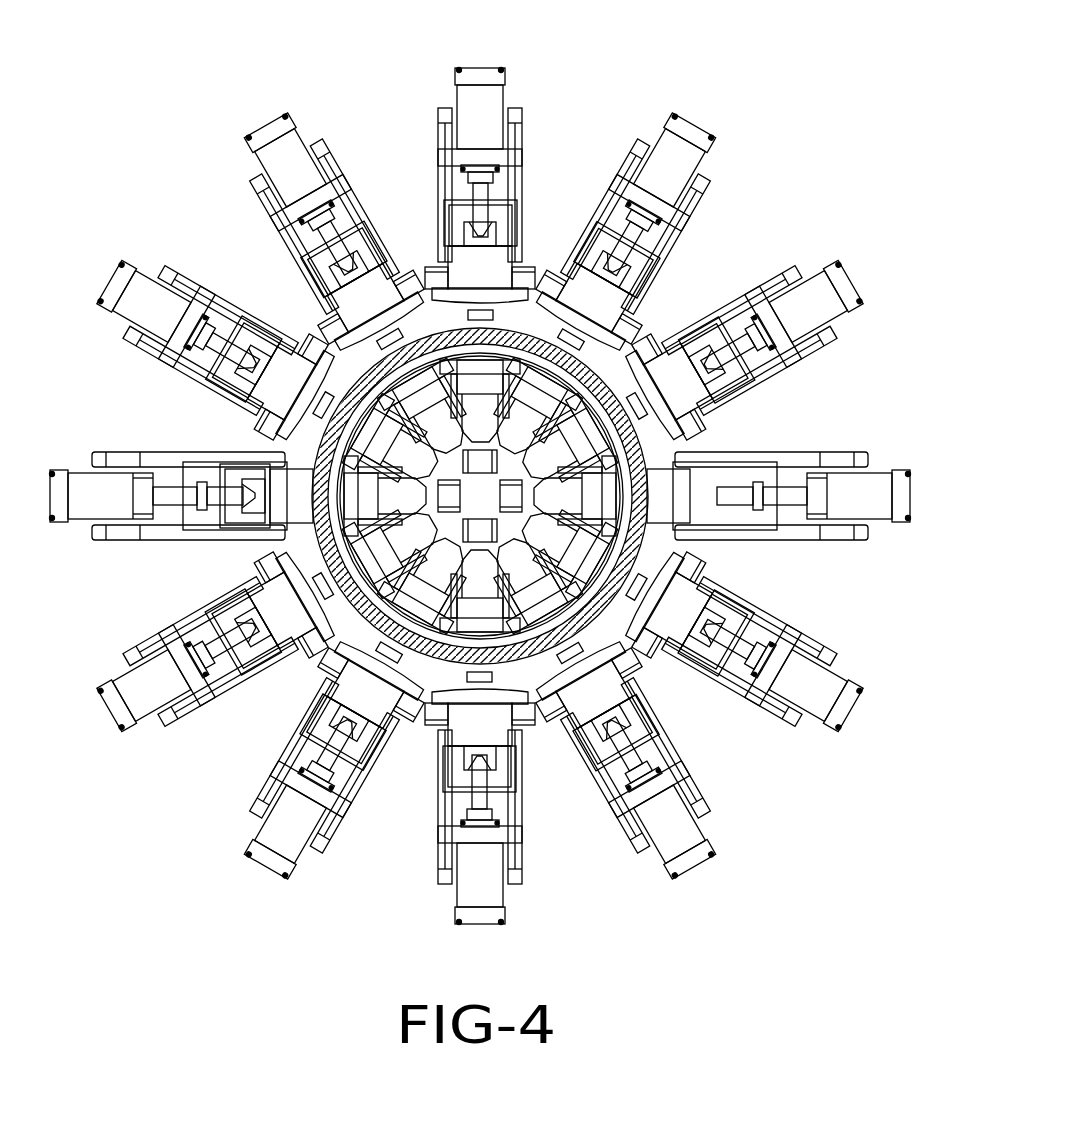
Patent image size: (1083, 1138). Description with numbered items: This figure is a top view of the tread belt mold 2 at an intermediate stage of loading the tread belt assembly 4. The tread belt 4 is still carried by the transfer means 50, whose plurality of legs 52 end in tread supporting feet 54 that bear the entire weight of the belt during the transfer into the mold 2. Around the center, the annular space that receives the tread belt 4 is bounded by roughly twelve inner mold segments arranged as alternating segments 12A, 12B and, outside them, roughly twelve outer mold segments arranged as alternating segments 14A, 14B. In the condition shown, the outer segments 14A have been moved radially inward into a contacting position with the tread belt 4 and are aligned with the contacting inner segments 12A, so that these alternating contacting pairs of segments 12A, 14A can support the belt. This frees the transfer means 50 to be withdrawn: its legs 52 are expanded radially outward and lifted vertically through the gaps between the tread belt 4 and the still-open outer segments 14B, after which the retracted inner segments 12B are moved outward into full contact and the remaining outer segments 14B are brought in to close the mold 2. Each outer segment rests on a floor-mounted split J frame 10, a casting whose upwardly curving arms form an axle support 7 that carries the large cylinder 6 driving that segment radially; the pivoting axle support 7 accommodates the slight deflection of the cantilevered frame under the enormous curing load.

The mold 2 is at (480, 468).
The tread belt assembly 4 is at (540, 333).
The cylinder 6 is at (680, 160).
The axle support 7 is at (605, 175).
The split J frame 10 is at (700, 195).
The inner mold segment 12A is at (548, 388).
The inner mold segment 12B is at (587, 442).
The outer mold segment 14A is at (262, 483).
The outer mold segment 14B is at (232, 597).
The transfer means 50 is at (505, 527).
The leg 52 is at (638, 432).
The tread supporting foot 54 is at (637, 408).